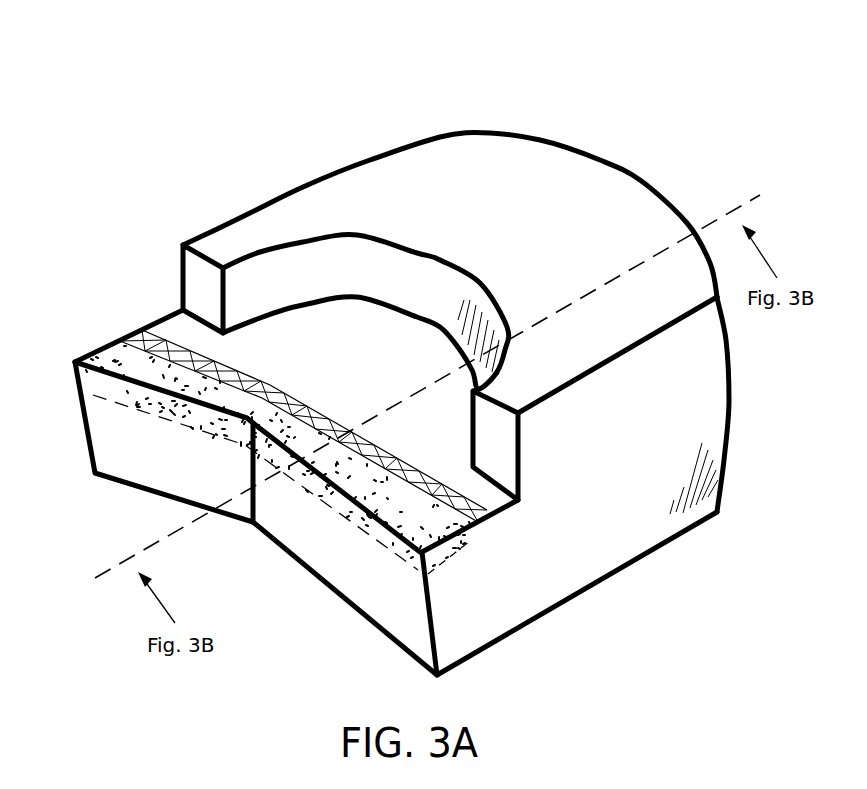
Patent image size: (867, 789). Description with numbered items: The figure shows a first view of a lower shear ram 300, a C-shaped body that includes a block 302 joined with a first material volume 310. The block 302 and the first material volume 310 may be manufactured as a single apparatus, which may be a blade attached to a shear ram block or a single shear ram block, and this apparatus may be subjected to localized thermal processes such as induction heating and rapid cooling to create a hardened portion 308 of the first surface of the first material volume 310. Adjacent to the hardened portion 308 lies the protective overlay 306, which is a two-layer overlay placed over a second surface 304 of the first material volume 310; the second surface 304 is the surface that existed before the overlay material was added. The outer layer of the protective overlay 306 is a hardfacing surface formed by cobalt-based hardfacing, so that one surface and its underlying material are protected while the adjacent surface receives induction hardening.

The lower shear ram 300 is at (686, 177).
The block 302 is at (398, 188).
The second surface 304 is at (472, 542).
The protective overlay 306 is at (127, 356).
The hardened portion 308 is at (123, 378).
The first material volume 310 is at (187, 442).